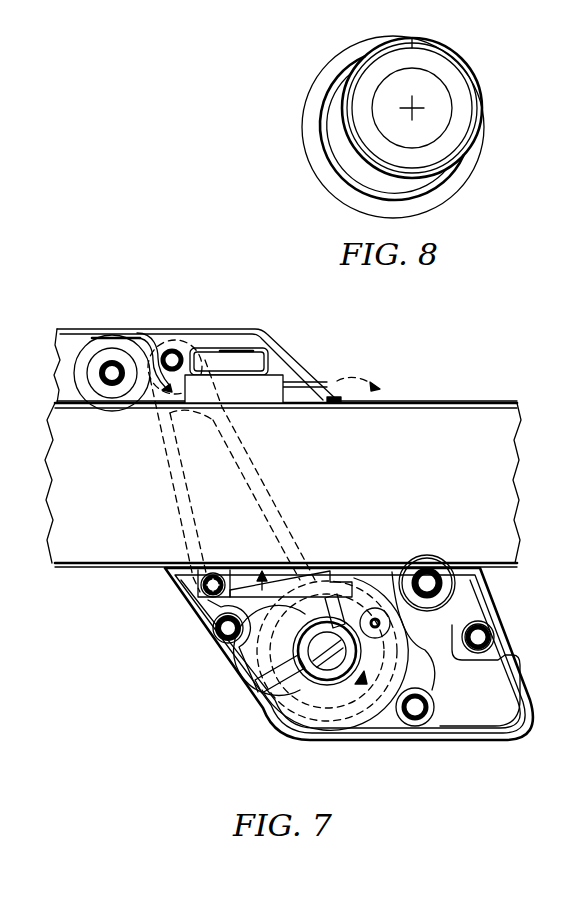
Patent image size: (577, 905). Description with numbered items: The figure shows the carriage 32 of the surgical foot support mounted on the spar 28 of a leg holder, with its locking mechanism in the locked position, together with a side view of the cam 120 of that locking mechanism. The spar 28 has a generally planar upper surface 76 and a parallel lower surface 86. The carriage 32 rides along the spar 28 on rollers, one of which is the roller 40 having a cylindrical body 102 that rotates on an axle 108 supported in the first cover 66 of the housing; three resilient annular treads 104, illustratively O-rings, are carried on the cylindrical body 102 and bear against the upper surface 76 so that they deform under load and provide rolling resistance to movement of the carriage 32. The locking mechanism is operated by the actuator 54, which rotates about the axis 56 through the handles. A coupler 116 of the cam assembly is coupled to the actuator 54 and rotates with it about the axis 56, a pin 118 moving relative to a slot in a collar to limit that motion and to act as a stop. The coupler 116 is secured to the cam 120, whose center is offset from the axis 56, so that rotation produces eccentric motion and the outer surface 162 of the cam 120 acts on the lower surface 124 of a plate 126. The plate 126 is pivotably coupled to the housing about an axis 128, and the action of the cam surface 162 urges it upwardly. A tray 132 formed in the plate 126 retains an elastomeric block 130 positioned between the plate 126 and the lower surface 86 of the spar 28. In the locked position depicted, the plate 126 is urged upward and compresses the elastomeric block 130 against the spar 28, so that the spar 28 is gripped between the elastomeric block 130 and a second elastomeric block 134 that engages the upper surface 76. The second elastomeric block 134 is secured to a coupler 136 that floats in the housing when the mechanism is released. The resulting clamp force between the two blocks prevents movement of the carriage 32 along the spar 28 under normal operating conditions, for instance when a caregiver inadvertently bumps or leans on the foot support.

In FIG. 7, the spar 28 is at (500, 437).
In FIG. 7, the carriage 32 is at (360, 338).
In FIG. 7, the roller 40 is at (153, 323).
In FIG. 7, the actuator 54 is at (180, 497).
In FIG. 8, the axis 56 is at (414, 110).
In FIG. 7, the axis 56 is at (230, 673).
In FIG. 7, the first cover 66 is at (483, 710).
In FIG. 7, the upper surface 76 is at (425, 400).
In FIG. 7, the lower surface 86 is at (503, 572).
In FIG. 7, the cylindrical body 102 is at (105, 357).
In FIG. 7, the annular treads 104 is at (90, 352).
In FIG. 7, the axle 108 is at (113, 372).
In FIG. 8, the coupler 116 is at (438, 147).
In FIG. 7, the pin 118 is at (271, 722).
In FIG. 8, the cam 120 is at (320, 162).
In FIG. 7, the cam 120 is at (362, 708).
In FIG. 7, the lower surface 124 is at (218, 630).
In FIG. 7, the plate 126 is at (345, 585).
In FIG. 7, the axis 128 is at (183, 602).
In FIG. 7, the elastomeric block 130 is at (313, 577).
In FIG. 7, the tray 132 is at (305, 548).
In FIG. 7, the second elastomeric block 134 is at (270, 387).
In FIG. 7, the coupler 136 is at (235, 367).
In FIG. 8, the outer surface 162 is at (297, 128).
In FIG. 7, the outer surface 162 is at (353, 722).